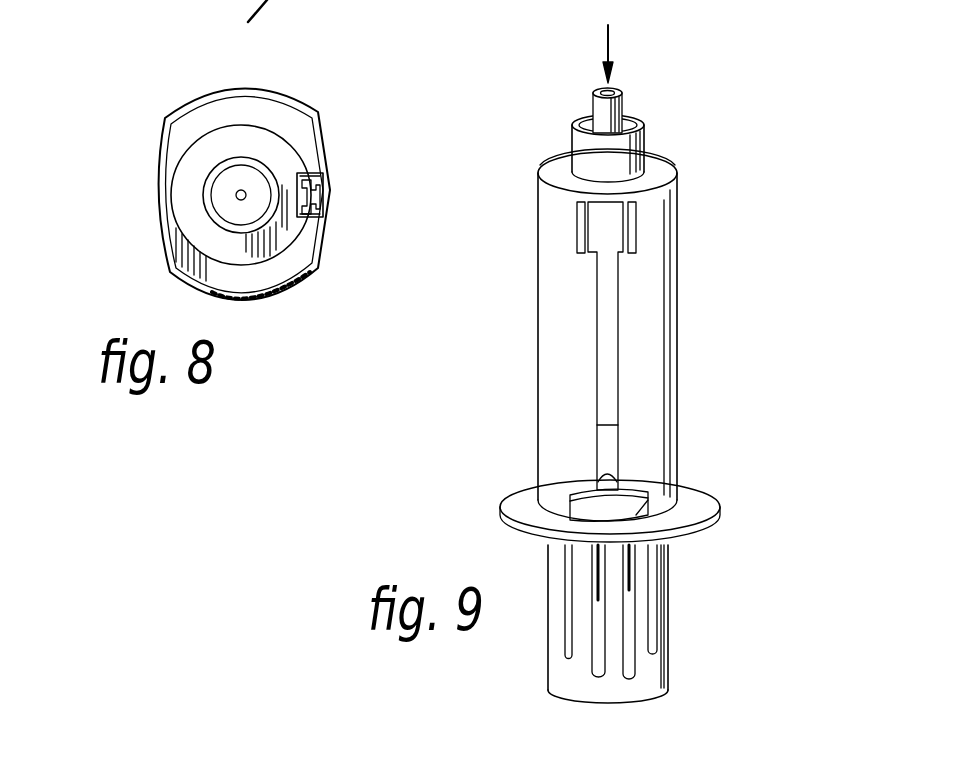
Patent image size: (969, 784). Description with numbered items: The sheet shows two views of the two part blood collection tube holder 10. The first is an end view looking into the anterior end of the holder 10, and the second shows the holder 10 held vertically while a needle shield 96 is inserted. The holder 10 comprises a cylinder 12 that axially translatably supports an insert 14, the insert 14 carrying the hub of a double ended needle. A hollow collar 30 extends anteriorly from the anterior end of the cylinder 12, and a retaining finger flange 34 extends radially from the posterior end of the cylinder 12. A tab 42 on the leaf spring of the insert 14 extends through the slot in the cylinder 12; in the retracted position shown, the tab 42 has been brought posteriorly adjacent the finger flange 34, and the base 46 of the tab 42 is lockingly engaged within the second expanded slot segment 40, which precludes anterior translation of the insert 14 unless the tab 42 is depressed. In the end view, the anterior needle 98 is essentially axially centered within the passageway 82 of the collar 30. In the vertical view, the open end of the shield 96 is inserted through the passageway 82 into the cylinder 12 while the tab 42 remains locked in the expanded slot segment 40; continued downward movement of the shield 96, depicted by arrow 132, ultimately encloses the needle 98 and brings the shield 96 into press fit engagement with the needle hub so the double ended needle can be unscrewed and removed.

In FIG. 8, the blood collection tube holder 10 is at (242, 216).
In FIG. 9, the cylinder 12 is at (534, 348).
In FIG. 9, the insert 14 is at (674, 616).
In FIG. 8, the collar 30 is at (252, 232).
In FIG. 9, the collar 30 is at (648, 157).
In FIG. 8, the finger flange 34 is at (295, 128).
In FIG. 8, the second circumferentially expanded slot segment 40 is at (307, 217).
In FIG. 8, the tab 42 is at (338, 193).
In FIG. 9, the tab 42 is at (650, 490).
In FIG. 8, the base 46 is at (307, 173).
In FIG. 9, the passageway 82 is at (628, 118).
In FIG. 9, the shield 96 is at (620, 110).
In FIG. 8, the anterior needle 98 is at (236, 195).
In FIG. 9, the arrow 132 is at (612, 45).